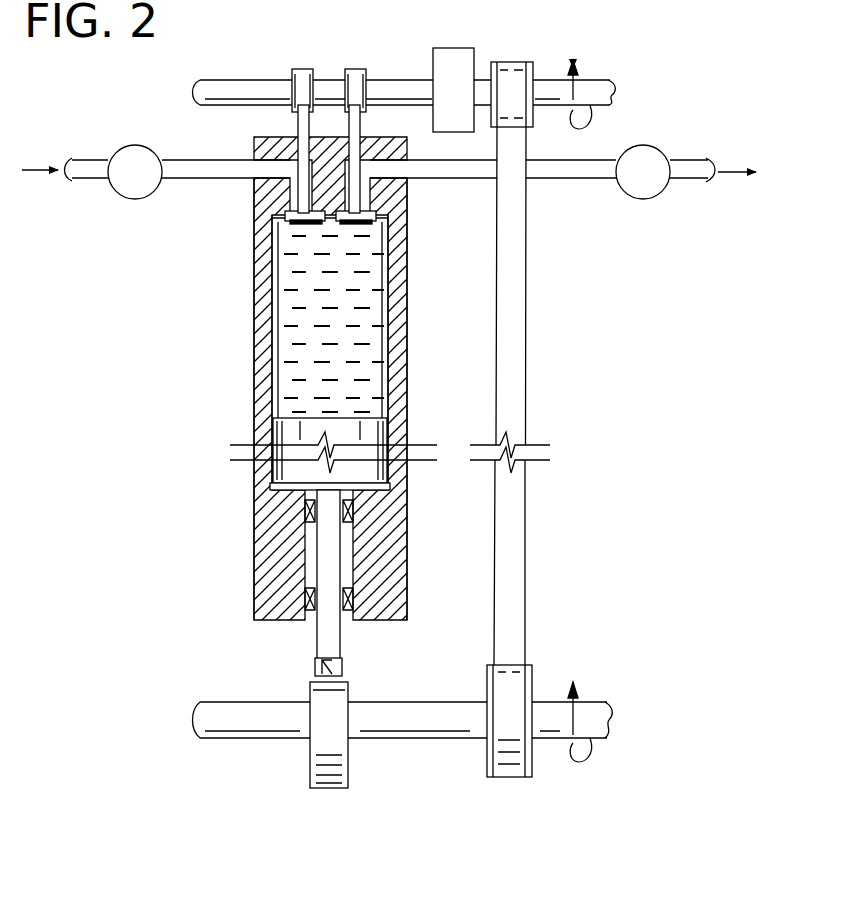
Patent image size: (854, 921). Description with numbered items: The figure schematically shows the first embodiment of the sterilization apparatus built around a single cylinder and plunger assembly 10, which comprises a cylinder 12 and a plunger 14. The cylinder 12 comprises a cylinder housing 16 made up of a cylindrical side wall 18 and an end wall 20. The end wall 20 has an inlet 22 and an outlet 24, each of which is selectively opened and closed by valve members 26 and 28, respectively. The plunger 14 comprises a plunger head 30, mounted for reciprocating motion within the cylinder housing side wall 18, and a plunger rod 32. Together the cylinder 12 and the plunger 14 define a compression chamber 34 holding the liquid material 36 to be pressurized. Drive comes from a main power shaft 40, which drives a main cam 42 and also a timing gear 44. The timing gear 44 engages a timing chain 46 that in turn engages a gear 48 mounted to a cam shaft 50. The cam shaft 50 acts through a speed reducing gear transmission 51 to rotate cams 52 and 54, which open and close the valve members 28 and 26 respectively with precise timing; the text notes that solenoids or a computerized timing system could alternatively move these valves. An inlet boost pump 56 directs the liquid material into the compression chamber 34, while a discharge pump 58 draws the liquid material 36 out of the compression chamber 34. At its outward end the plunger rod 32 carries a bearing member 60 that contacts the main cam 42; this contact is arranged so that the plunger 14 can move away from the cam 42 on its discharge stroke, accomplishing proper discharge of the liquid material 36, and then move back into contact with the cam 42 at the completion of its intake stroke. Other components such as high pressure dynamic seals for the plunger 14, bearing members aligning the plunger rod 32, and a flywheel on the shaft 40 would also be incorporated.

The cylinder and plunger assembly 10 is at (232, 378).
The cylinder 12 is at (250, 512).
The plunger 14 is at (276, 433).
The cylinder housing 16 is at (262, 268).
The cylindrical side wall 18 is at (262, 300).
The end wall 20 is at (270, 148).
The inlet 22 is at (258, 176).
The outlet 24 is at (398, 172).
The valve member 26 is at (270, 228).
The valve member 28 is at (392, 230).
The plunger head 30 is at (265, 478).
The plunger rod 32 is at (322, 541).
The compression chamber 34 is at (282, 330).
The liquid material 36 is at (300, 356).
The main power shaft 40 is at (228, 735).
The main cam 42 is at (310, 762).
The timing gear 44 is at (487, 765).
The timing chain 46 is at (512, 372).
The gear 48 is at (533, 65).
The cam shaft 50 is at (588, 88).
The speed reducing gear transmission 51 is at (455, 60).
The cam 52 is at (303, 72).
The cam 54 is at (356, 72).
The inlet boost pump 56 is at (128, 194).
The discharge pump 58 is at (655, 194).
The bearing member 60 is at (316, 665).